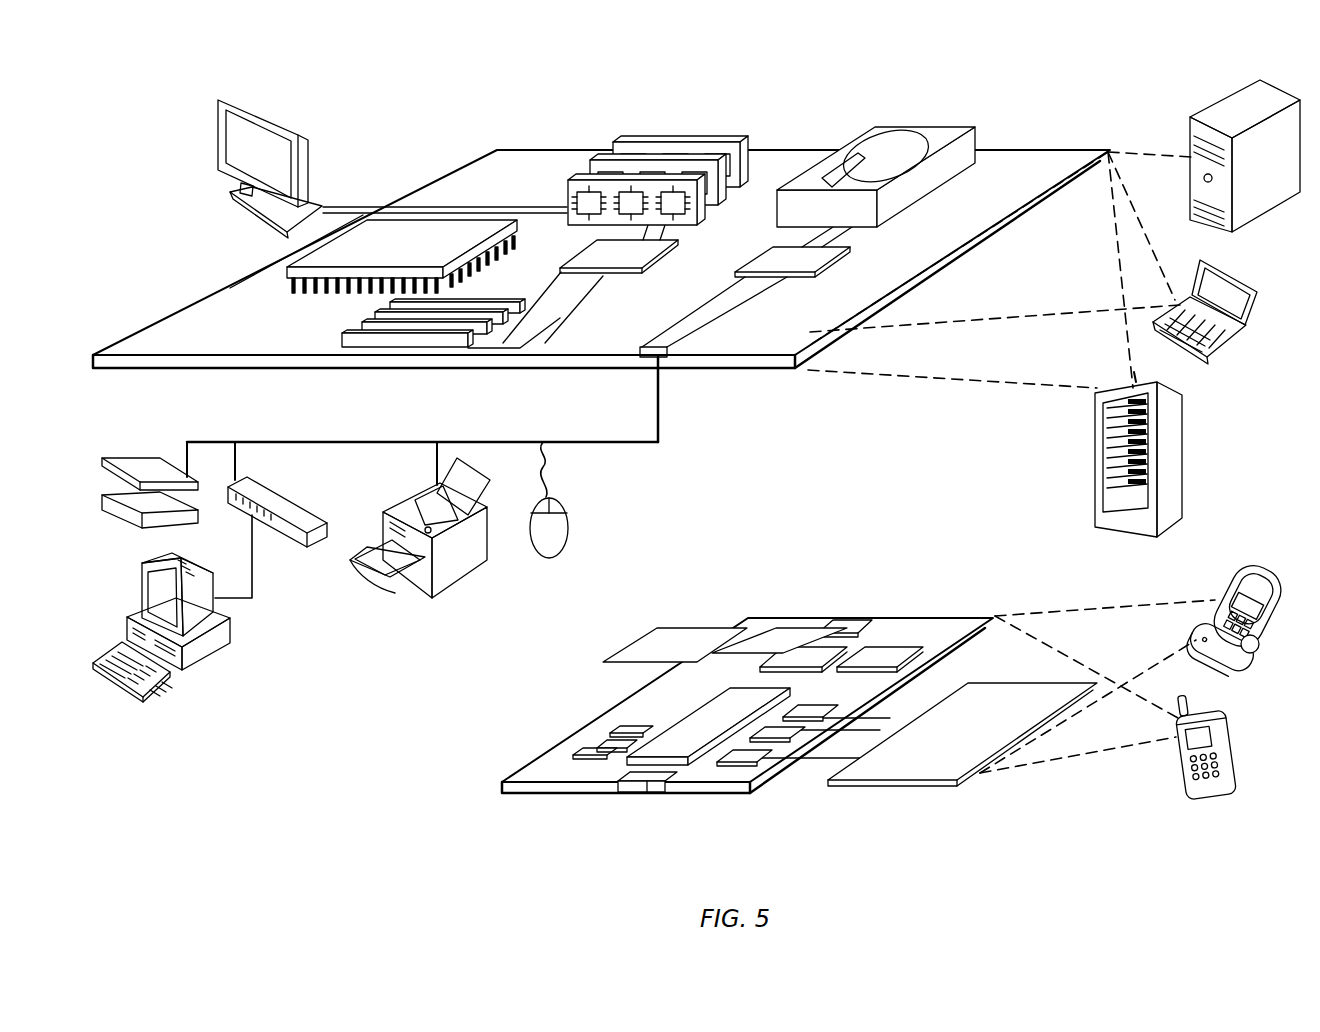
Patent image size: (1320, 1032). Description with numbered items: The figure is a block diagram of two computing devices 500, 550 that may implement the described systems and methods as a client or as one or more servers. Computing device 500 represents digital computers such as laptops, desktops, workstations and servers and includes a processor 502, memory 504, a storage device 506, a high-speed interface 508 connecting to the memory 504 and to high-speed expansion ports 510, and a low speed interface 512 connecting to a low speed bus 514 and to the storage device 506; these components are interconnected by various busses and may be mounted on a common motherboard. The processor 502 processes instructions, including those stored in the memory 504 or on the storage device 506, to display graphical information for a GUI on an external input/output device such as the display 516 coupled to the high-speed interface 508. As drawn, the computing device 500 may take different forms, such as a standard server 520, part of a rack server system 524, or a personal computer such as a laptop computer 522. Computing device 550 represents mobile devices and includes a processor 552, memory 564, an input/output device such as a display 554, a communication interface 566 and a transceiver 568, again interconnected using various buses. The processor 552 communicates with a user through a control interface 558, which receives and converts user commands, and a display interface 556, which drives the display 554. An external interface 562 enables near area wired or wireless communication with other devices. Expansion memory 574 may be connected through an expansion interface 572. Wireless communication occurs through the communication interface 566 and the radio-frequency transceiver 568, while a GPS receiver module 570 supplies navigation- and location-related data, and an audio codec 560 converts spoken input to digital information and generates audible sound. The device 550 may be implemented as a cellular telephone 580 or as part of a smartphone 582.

The computing device 500 is at (419, 115).
The processor 502 is at (287, 268).
The memory 504 is at (634, 140).
The storage device 506 is at (857, 135).
The high-speed interface 508 is at (590, 252).
The high-speed expansion ports 510 is at (357, 327).
The low speed interface 512 is at (775, 253).
The low speed bus 514 is at (668, 357).
The display 516 is at (227, 104).
The standard server 520 is at (1190, 133).
The laptop computer 522 is at (1257, 285).
The rack server system 524 is at (1094, 485).
The computing device 550 is at (469, 795).
The processor 552 is at (680, 748).
The display 554 is at (923, 763).
The display interface 556 is at (750, 762).
The control interface 558 is at (788, 740).
The audio codec 560 is at (812, 712).
The external interface 562 is at (645, 792).
The memory 564 is at (588, 735).
The communication interface 566 is at (805, 655).
The transceiver 568 is at (883, 655).
The GPS receiver module 570 is at (853, 618).
The expansion interface 572 is at (727, 628).
The expansion memory 574 is at (657, 628).
The cellular telephone 580 is at (1233, 572).
The smartphone 582 is at (1181, 760).